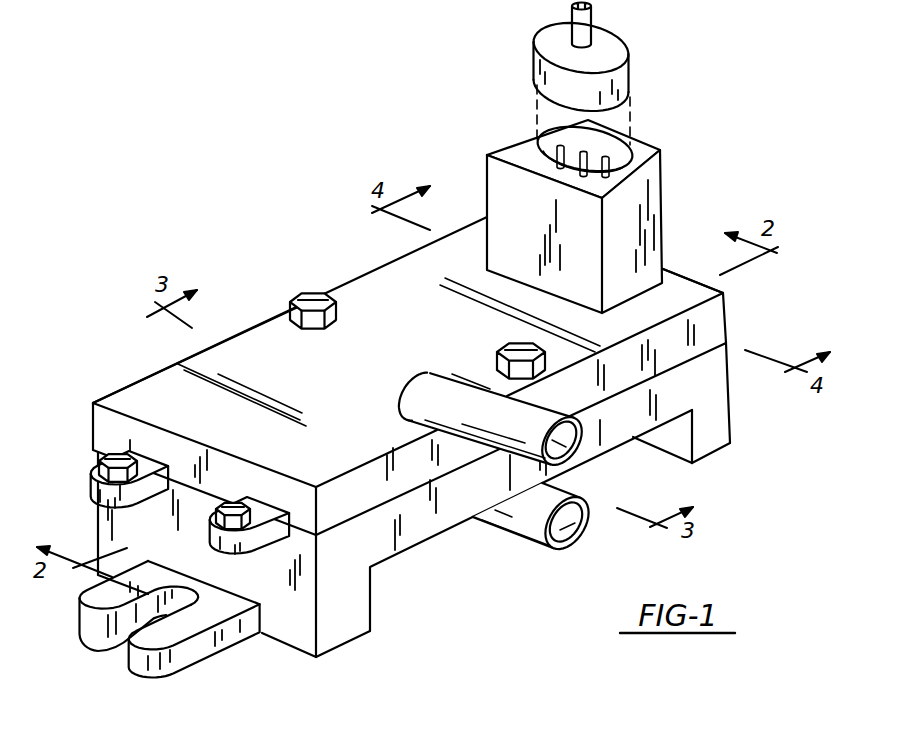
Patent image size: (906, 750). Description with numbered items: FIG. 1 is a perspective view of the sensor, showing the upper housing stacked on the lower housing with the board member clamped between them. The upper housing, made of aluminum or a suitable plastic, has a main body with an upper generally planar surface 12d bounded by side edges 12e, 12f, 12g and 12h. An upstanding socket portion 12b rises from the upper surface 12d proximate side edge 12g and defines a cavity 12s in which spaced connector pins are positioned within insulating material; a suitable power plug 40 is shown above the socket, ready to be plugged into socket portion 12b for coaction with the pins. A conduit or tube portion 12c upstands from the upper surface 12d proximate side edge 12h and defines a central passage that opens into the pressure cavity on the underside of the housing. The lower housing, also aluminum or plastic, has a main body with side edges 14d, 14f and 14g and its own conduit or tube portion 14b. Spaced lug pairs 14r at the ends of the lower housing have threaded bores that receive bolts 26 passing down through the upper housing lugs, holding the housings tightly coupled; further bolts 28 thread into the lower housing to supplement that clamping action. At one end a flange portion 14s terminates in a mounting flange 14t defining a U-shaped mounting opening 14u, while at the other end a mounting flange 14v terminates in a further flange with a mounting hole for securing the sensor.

The socket portion 12b is at (624, 208).
The tube portion 12c is at (474, 381).
The upper planar surface 12d is at (332, 383).
The side edge 12e is at (110, 434).
The side edge 12f is at (108, 395).
The side edge 12g is at (718, 295).
The side edge 12h is at (345, 498).
The cavity 12s is at (612, 150).
The tube portion 14b is at (525, 523).
The side edge 14d is at (110, 530).
The side edge 14f is at (730, 414).
The side edge 14g is at (633, 438).
The lug pairs 14r is at (232, 560).
The flange portion 14s is at (350, 633).
The mounting flange 14t is at (205, 652).
The U-shaped mounting opening 14u is at (107, 638).
The mounting flange 14v is at (708, 450).
The bolts 26 is at (237, 505).
The bolts 28 is at (312, 292).
The power plug 40 is at (630, 73).